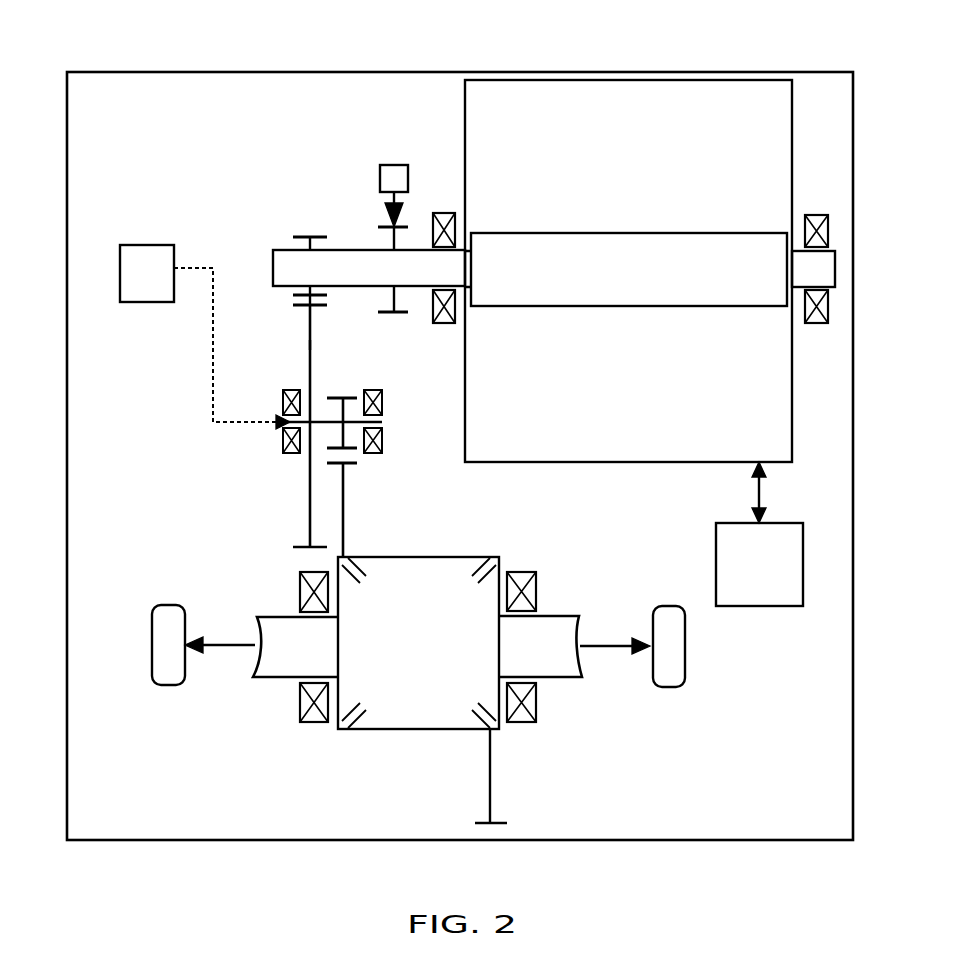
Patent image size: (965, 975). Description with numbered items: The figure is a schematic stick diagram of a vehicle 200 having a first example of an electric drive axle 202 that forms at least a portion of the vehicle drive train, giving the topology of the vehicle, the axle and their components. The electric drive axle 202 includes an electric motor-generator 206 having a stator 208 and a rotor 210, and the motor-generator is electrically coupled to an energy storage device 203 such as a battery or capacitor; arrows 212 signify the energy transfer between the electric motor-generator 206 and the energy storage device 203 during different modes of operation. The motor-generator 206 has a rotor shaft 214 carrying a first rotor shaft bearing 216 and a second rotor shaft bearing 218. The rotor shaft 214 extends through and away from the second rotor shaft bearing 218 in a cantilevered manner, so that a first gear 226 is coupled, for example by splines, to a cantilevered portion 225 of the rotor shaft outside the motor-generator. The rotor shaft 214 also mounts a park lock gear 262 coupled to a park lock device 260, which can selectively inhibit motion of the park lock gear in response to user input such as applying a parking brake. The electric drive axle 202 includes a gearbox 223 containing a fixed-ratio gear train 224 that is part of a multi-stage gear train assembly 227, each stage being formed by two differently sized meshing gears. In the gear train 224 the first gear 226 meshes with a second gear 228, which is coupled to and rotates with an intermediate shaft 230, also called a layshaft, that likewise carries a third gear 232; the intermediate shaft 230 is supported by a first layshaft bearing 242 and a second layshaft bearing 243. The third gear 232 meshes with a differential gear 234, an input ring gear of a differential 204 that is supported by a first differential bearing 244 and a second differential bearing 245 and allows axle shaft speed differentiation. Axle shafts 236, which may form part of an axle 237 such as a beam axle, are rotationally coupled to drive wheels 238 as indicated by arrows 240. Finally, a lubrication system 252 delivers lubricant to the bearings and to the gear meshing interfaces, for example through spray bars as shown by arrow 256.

The vehicle 200 is at (890, 42).
The electric drive axle 202 is at (138, 129).
The energy storage device 203 is at (803, 563).
The differential 204 is at (440, 557).
The electric motor-generator 206 is at (465, 120).
The stator 208 is at (637, 389).
The rotor 210 is at (662, 214).
The arrows 212 is at (761, 492).
The rotor shaft 214 is at (525, 233).
The first rotor shaft bearing 216 is at (807, 215).
The second rotor shaft bearing 218 is at (442, 213).
The gearbox 223 is at (359, 187).
The gear train 224 is at (275, 234).
The cantilevered portion 225 is at (355, 289).
The first gear 226 is at (314, 241).
The multi-stage gear train assembly 227 is at (245, 154).
The second gear 228 is at (310, 346).
The intermediate shaft 230 is at (316, 420).
The third gear 232 is at (343, 397).
The differential gear 234 is at (343, 512).
The axle shafts 236 is at (270, 613).
The axle 237 is at (647, 721).
The drive wheels 238 is at (168, 605).
The arrows 240 is at (227, 648).
The first layshaft bearing 242 is at (382, 398).
The second layshaft bearing 243 is at (283, 398).
The first differential bearing 244 is at (521, 722).
The second differential bearing 245 is at (312, 722).
The lubrication system 252 is at (149, 303).
The arrow 256 is at (213, 356).
The park lock device 260 is at (394, 165).
The park lock gear 262 is at (402, 312).